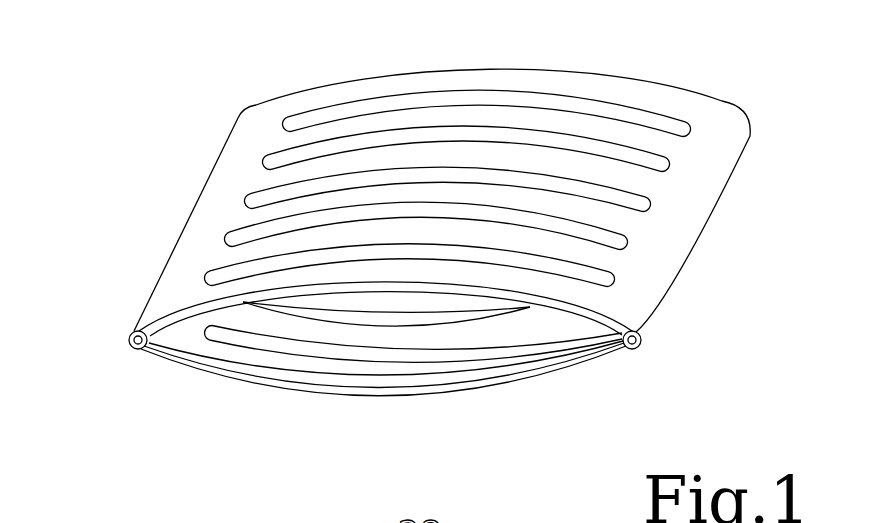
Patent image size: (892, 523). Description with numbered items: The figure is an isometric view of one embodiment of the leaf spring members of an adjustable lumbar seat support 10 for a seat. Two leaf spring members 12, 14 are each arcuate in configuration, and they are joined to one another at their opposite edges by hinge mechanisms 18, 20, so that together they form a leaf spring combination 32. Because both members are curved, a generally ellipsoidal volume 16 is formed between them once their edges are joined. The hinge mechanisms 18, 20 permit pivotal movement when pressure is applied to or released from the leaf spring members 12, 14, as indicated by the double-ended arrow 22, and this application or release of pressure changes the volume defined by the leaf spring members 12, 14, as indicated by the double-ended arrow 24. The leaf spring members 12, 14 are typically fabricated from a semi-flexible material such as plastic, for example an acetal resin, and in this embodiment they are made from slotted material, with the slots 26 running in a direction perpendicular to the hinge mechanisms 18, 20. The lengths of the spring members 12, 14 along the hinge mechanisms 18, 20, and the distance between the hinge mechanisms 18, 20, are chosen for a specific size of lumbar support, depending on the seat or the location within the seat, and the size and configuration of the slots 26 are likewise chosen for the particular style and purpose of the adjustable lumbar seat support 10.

The adjustable lumbar seat support 10 is at (419, 229).
The leaf spring member 12 is at (428, 166).
The leaf spring member 14 is at (442, 395).
The ellipsoidal volume 16 is at (232, 387).
The hinge mechanism 18 is at (129, 340).
The hinge mechanism 20 is at (641, 337).
The double-ended arrow 22 is at (460, 158).
The double-ended arrow 24 is at (387, 290).
The slots 26 is at (626, 243).
The leaf spring combination 32 is at (185, 201).